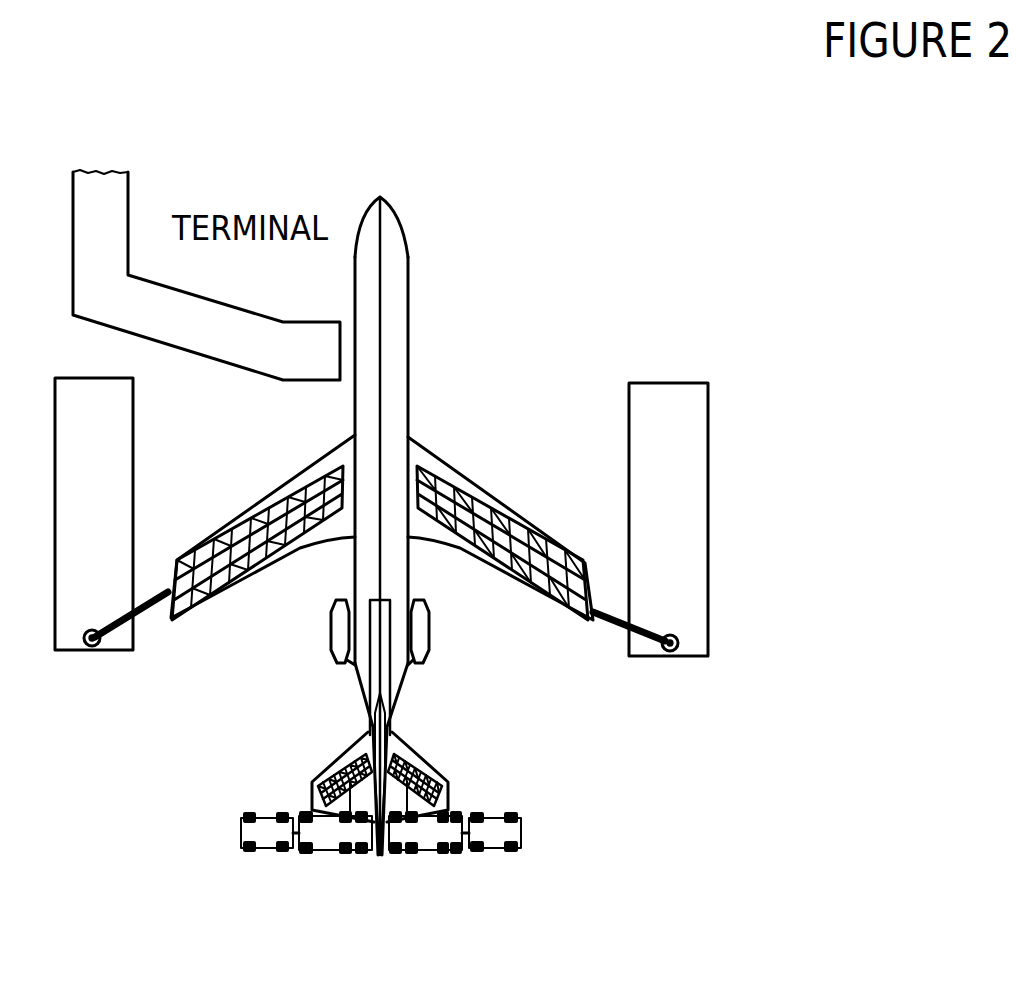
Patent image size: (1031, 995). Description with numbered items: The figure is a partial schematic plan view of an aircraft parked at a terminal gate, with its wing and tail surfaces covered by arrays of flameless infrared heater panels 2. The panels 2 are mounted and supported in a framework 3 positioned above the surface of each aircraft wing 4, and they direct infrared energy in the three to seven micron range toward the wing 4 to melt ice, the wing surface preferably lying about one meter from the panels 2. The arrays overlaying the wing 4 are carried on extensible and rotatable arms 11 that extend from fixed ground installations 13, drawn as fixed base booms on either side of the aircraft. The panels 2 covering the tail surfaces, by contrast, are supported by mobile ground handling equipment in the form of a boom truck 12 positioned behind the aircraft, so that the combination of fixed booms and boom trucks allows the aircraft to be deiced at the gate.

The infrared heater panels 2 is at (382, 526).
The framework 3 is at (527, 530).
The aircraft wing 4 is at (455, 473).
The arms 11 is at (615, 618).
The boom truck 12 is at (493, 855).
The fixed ground installations 13 is at (708, 522).